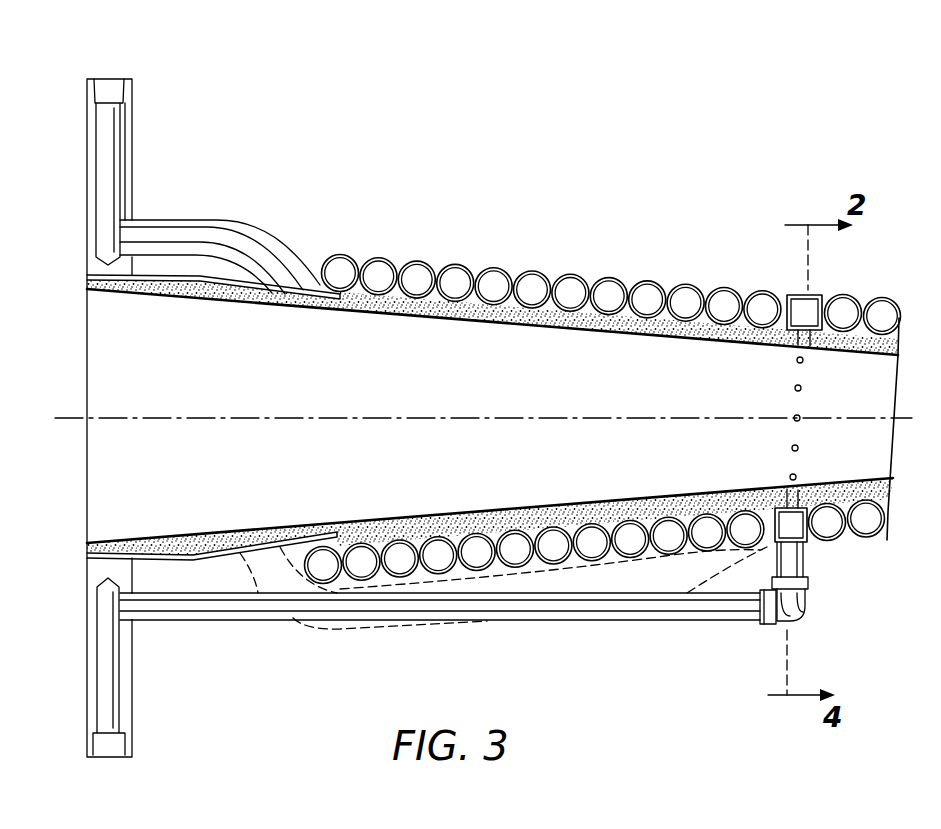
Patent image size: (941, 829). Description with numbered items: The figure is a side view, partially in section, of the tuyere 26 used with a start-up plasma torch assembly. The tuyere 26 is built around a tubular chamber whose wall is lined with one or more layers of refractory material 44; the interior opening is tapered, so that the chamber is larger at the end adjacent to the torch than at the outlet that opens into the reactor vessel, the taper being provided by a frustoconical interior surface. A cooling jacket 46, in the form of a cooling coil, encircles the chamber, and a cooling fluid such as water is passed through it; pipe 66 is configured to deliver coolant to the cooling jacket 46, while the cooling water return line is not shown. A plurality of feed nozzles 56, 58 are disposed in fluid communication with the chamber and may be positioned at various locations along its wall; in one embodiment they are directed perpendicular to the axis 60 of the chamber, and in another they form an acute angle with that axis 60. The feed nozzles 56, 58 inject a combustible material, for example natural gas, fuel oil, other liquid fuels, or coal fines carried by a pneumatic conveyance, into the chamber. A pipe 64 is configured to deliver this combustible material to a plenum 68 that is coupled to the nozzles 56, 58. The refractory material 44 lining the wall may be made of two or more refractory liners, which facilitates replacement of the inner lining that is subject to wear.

The tuyere 26 is at (447, 380).
The refractory material 44 is at (613, 258).
The cooling jacket 46 is at (572, 291).
The feed nozzle 56 is at (799, 351).
The feed nozzle 58 is at (793, 508).
The axis 60 is at (290, 412).
The pipe 64 is at (640, 611).
The pipe 66 is at (107, 160).
The plenum 68 is at (812, 308).